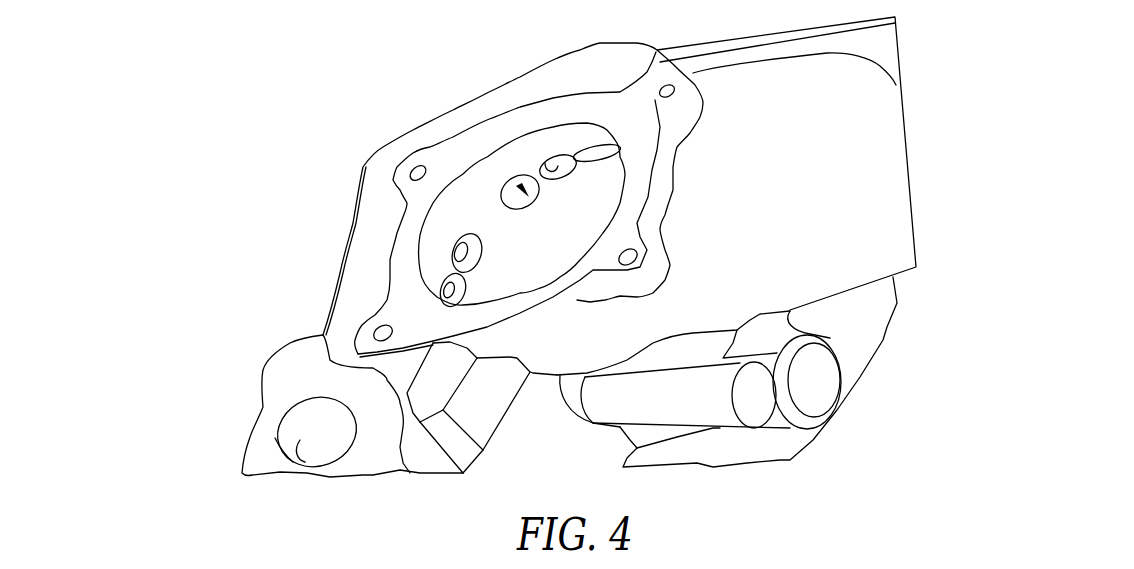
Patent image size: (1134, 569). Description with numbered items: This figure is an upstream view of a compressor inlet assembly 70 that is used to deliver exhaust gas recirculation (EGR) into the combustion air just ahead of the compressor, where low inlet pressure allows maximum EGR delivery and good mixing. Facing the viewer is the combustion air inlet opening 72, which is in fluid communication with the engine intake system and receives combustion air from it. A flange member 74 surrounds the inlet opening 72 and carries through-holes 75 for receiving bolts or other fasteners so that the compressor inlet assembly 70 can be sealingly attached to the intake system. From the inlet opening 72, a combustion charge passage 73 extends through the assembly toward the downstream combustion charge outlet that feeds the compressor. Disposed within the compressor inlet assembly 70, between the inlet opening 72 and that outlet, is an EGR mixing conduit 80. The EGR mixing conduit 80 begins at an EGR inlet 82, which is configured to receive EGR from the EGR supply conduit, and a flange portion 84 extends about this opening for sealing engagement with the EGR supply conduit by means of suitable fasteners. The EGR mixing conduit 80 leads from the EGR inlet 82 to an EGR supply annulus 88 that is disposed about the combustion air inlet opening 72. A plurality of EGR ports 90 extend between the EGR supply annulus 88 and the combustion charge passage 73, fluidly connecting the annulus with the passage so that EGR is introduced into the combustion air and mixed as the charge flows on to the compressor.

The compressor inlet assembly 70 is at (308, 266).
The combustion air inlet opening 72 is at (452, 212).
The combustion charge passage 73 is at (552, 251).
The flange member 74 is at (487, 323).
The through-holes 75 is at (669, 92).
The EGR mixing conduit 80 is at (330, 426).
The EGR inlet 82 is at (297, 442).
The flange portion 84 is at (303, 392).
The EGR supply annulus 88 is at (560, 203).
The EGR ports 90 is at (545, 163).